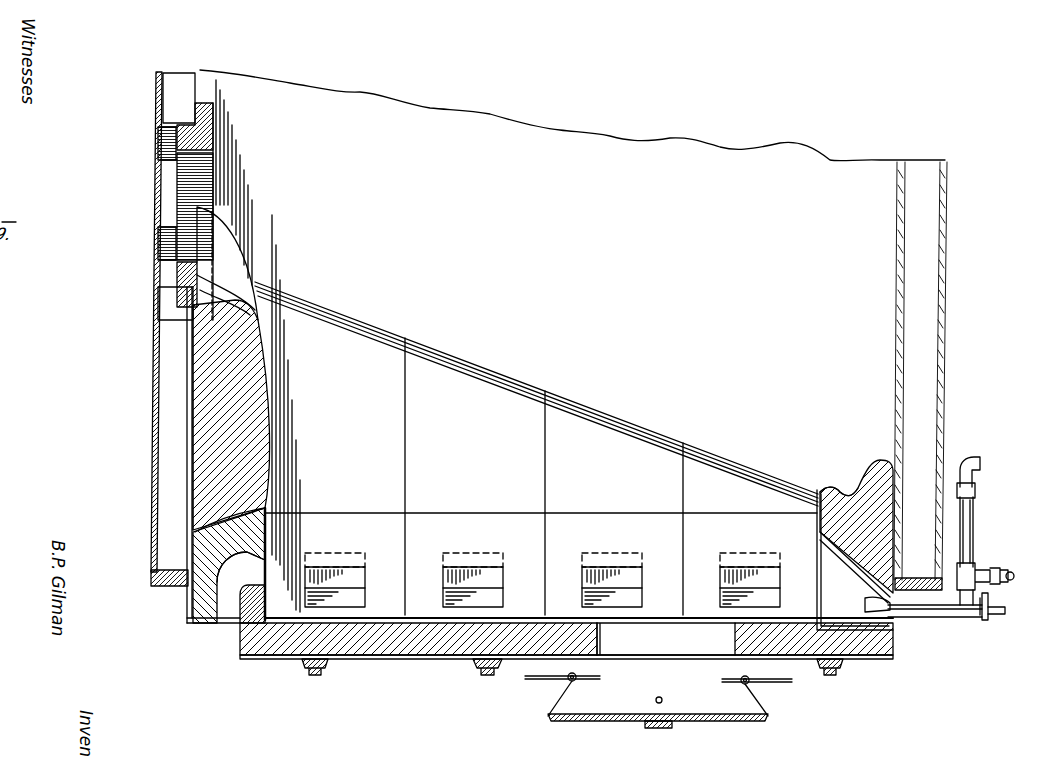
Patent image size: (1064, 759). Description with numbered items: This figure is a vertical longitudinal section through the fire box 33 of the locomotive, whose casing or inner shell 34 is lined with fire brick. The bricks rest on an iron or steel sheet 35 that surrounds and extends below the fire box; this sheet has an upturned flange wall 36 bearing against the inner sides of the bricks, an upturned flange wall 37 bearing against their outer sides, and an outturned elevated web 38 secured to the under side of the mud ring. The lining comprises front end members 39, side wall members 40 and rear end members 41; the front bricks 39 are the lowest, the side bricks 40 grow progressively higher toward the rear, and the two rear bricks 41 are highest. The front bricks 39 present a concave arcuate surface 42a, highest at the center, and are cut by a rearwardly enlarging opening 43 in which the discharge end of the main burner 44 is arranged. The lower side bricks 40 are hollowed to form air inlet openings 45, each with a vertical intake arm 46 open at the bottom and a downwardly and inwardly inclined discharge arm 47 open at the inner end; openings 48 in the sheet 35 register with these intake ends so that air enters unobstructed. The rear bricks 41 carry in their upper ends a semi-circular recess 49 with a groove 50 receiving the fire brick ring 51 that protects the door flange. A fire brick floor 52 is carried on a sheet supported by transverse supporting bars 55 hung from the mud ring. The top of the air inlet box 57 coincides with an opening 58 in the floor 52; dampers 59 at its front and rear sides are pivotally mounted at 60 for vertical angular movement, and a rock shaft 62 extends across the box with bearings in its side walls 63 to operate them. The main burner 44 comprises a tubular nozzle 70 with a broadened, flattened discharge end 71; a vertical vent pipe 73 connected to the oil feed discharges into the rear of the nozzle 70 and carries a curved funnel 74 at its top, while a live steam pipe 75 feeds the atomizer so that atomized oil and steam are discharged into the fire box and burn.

The fire box 33 is at (945, 325).
The casing or inner shell 34 is at (908, 273).
The iron or steel sheet 35 is at (202, 627).
The upturned flange wall 36 is at (275, 640).
The upturned flange wall 37 is at (186, 613).
The outturned elevated portion or web 38 is at (162, 594).
The front end fire brick members 39 is at (880, 472).
The side wall fire brick members 40 is at (590, 415).
The rear end fire brick members 41 is at (268, 374).
The concave arcuate surface 42a is at (846, 491).
The rearwardly enlarging opening 43 is at (868, 565).
The main burner 44 is at (928, 612).
The air inlet openings 45 is at (262, 558).
The vertical intake arm 46 is at (233, 620).
The inclined discharge arm 47 is at (282, 553).
The openings 48 is at (222, 638).
The semi-circular recess 49 is at (256, 257).
The groove 50 is at (197, 318).
The fire brick ring 51 is at (215, 165).
The fire brick floor 52 is at (400, 660).
The supporting bars 55 is at (376, 658).
The air inlet box 57 is at (615, 722).
The opening 58 is at (655, 642).
The dampers 59 is at (535, 682).
The pivots 60 is at (590, 681).
The rock shaft 62 is at (659, 696).
The side walls 63 is at (687, 709).
The tubular nozzle 70 is at (975, 618).
The discharge end 71 is at (874, 603).
The vertical vent pipe 73 is at (970, 524).
The curved funnel 74 is at (985, 461).
The live steam pipe 75 is at (1005, 613).